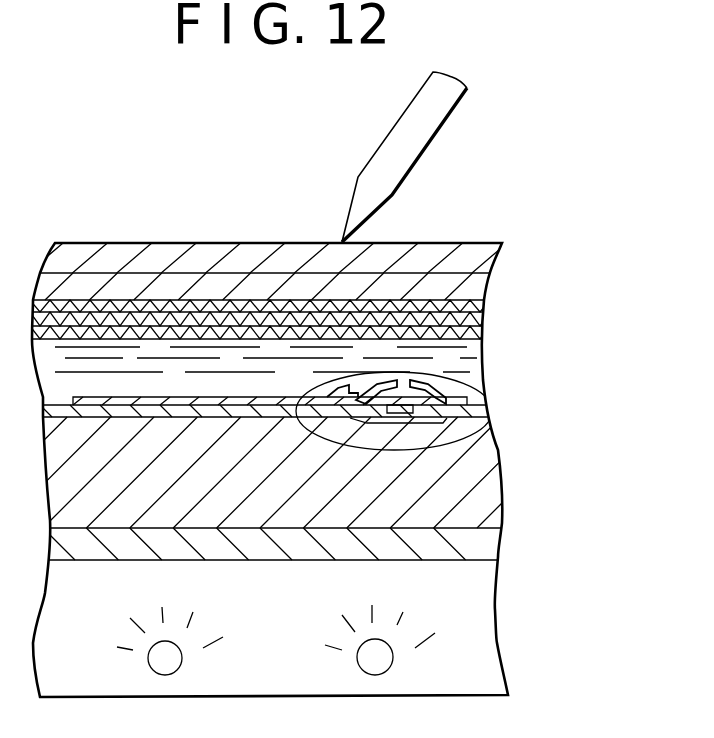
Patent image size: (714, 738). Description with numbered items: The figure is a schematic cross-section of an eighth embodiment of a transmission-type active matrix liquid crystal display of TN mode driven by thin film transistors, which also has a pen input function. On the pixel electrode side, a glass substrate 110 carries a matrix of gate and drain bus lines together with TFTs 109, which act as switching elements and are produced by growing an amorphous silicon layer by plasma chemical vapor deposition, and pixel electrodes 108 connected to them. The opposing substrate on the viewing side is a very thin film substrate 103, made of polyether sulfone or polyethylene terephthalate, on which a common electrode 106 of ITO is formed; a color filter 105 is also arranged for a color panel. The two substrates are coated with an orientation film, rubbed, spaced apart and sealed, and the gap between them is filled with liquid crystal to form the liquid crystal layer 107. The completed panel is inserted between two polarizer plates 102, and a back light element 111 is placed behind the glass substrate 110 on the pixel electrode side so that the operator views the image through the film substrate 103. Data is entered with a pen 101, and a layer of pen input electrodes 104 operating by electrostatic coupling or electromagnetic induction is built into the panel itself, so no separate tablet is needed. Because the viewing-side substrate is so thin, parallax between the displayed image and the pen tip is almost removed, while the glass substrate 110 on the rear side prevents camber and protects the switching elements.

The pen 101 is at (443, 130).
The polarizer plates 102 is at (482, 250).
The film substrate 103 is at (490, 283).
The pen input electrodes 104 is at (483, 300).
The color filter 105 is at (483, 319).
The common electrode 106 is at (477, 327).
The liquid crystal layer 107 is at (470, 358).
The pixel electrodes 108 is at (440, 370).
The TFTs 109 is at (428, 448).
The glass substrate 110 is at (488, 497).
The back light element 111 is at (473, 640).